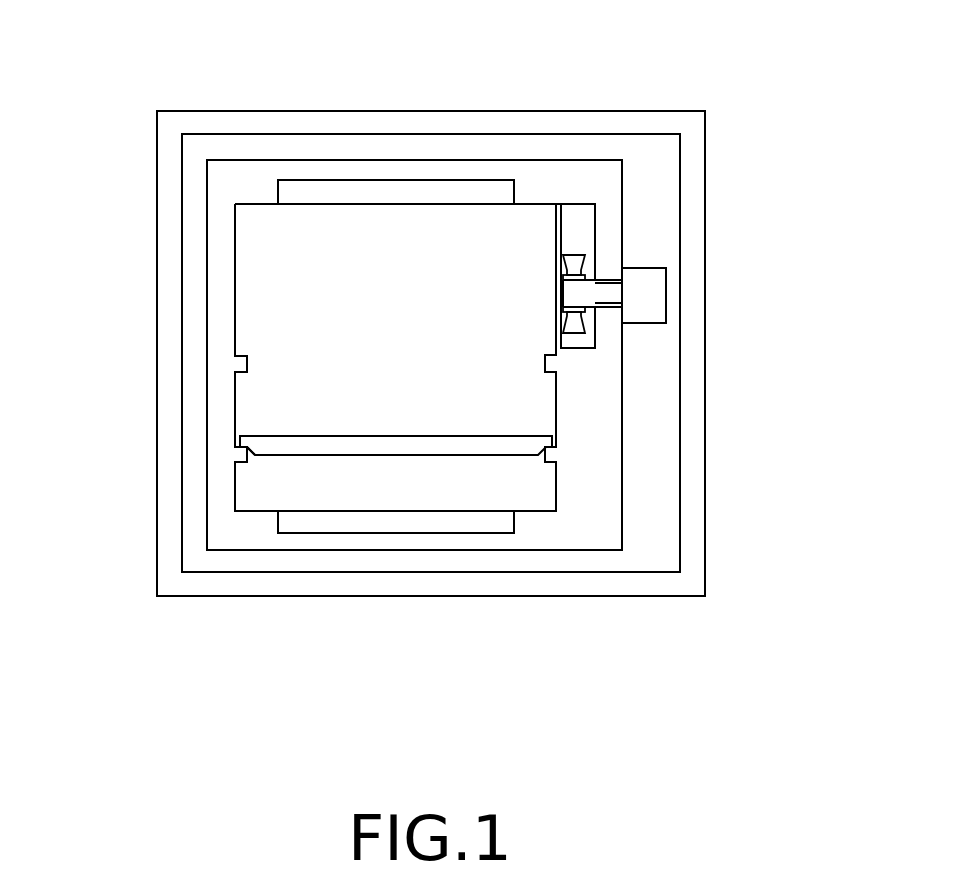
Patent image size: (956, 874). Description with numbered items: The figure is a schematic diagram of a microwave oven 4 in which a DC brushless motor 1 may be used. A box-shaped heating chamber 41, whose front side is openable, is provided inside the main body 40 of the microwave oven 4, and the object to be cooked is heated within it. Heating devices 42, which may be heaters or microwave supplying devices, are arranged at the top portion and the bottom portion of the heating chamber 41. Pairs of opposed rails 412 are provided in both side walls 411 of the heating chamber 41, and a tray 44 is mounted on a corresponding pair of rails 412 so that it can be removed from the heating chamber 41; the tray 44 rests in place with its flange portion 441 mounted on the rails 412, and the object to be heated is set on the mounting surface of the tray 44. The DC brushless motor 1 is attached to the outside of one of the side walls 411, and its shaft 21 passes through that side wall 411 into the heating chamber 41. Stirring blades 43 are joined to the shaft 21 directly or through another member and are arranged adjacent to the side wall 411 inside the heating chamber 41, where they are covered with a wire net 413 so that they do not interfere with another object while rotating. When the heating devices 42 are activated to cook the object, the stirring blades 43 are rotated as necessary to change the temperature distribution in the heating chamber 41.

The microwave oven 4 is at (99, 33).
The DC brushless motor 1 is at (648, 291).
The shaft 21 is at (598, 297).
The main body 40 is at (173, 255).
The heating chamber 41 is at (395, 209).
The side wall 411 is at (222, 332).
The rail 412 is at (545, 365).
The wire net 413 is at (558, 238).
The heating device 42 is at (329, 192).
The stirring blade 43 is at (577, 265).
The tray 44 is at (300, 440).
The flange portion 441 is at (238, 446).